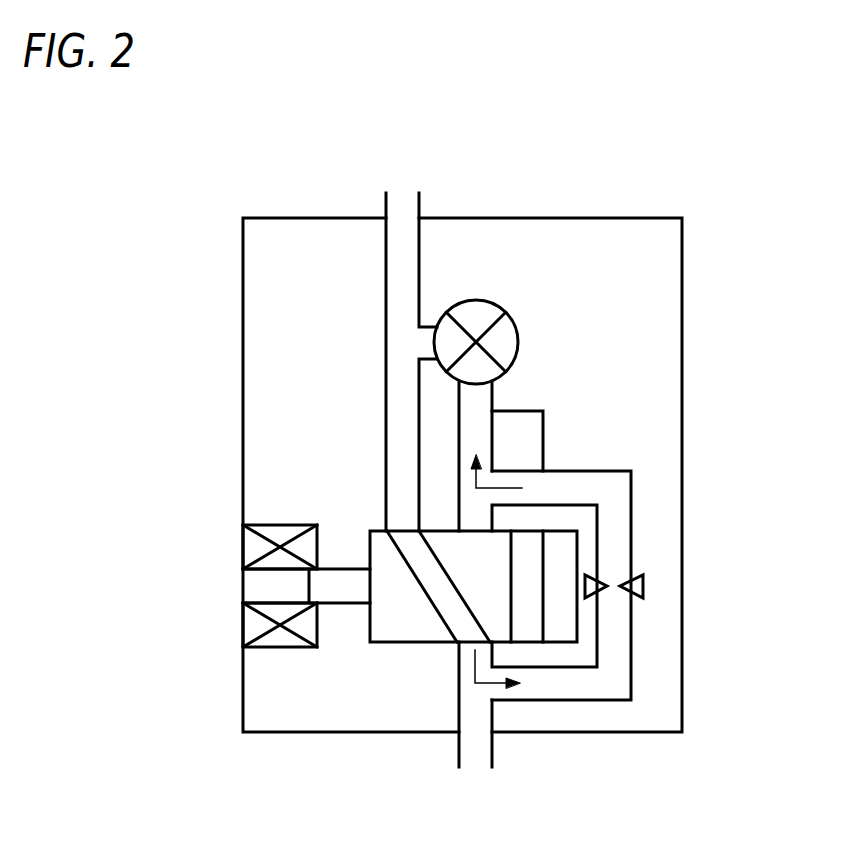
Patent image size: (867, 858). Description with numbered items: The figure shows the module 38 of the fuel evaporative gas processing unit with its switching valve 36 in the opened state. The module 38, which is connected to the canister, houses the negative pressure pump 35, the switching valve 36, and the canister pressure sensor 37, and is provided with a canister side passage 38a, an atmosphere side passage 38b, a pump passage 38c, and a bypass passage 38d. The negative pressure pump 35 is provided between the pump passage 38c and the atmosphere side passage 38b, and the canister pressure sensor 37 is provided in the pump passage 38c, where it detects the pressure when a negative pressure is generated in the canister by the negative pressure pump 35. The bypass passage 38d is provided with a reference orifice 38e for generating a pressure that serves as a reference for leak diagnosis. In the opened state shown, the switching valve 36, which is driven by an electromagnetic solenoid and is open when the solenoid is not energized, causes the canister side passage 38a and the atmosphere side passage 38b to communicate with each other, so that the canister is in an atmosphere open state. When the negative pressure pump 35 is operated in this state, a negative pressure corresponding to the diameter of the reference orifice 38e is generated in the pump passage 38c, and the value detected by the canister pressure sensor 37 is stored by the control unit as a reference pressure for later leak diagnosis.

The module 38 is at (622, 197).
The canister side passage 38a is at (473, 717).
The atmosphere side passage 38b is at (400, 286).
The pump passage 38c is at (480, 400).
The bypass passage 38d is at (620, 527).
The reference orifice 38e is at (622, 586).
The negative pressure pump 35 is at (517, 328).
The switching valve 36 is at (410, 630).
The canister pressure sensor 37 is at (530, 440).